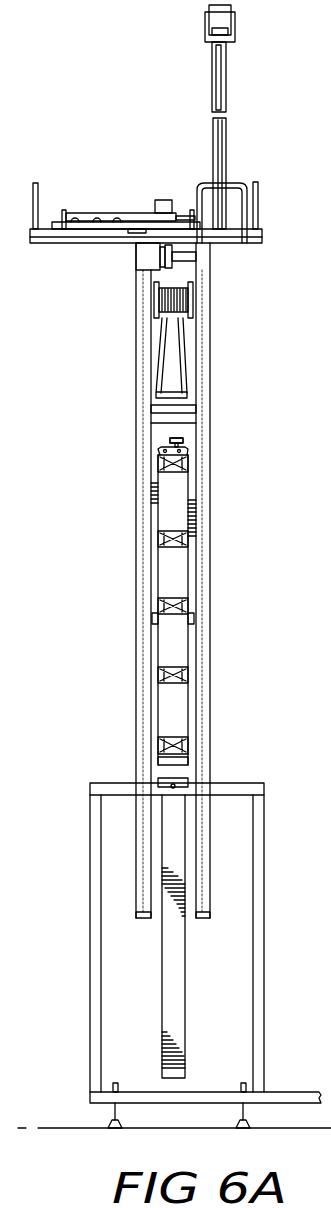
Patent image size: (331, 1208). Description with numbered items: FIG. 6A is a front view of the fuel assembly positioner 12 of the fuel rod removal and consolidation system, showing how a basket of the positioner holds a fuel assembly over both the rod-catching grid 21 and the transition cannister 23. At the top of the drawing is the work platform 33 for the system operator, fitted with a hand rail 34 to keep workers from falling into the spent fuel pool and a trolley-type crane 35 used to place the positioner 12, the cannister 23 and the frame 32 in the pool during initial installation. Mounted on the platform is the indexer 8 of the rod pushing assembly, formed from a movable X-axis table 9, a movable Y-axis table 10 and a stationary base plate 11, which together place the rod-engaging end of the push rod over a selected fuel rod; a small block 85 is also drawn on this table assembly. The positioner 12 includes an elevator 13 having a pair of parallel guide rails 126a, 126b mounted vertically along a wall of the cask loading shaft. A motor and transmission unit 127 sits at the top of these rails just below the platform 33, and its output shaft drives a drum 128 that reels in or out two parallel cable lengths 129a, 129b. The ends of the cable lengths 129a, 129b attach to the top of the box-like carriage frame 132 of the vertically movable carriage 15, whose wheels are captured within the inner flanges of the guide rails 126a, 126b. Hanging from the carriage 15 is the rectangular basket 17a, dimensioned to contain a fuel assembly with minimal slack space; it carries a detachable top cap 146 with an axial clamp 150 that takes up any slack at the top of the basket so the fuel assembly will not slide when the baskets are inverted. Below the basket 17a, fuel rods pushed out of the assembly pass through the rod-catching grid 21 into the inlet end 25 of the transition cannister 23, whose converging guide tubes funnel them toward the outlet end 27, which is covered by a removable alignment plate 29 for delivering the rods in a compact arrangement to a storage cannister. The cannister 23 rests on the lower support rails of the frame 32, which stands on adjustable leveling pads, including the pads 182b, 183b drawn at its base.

The indexer 8 is at (96, 192).
The X-axis table 9 is at (132, 214).
The Y-axis table 10 is at (177, 228).
The base plate 11 is at (133, 233).
The fuel assembly positioner 12 is at (137, 497).
The elevator 13 is at (203, 492).
The carriage 15 is at (186, 439).
The basket 17a is at (175, 577).
The rod-catching grid 21 is at (178, 760).
The transition cannister 23 is at (185, 967).
The inlet end 25 is at (178, 785).
The outlet end 27 is at (180, 1067).
The alignment plate 29 is at (185, 1070).
The frame 32 is at (96, 783).
The work platform 33 is at (62, 245).
The hand rail 34 is at (248, 182).
The trolley-type crane 35 is at (212, 20).
The block 85 is at (161, 200).
The guide rail 126a is at (143, 556).
The guide rail 126b is at (203, 536).
The motor and transmission unit 127 is at (187, 258).
The drum 128 is at (190, 310).
The cable length 129a is at (163, 360).
The cable length 129b is at (183, 375).
The carriage frame 132 is at (158, 417).
The top cap 146 is at (188, 449).
The axial clamp 150 is at (168, 437).
The left foot 182b is at (115, 1128).
The right foot 183b is at (246, 1128).